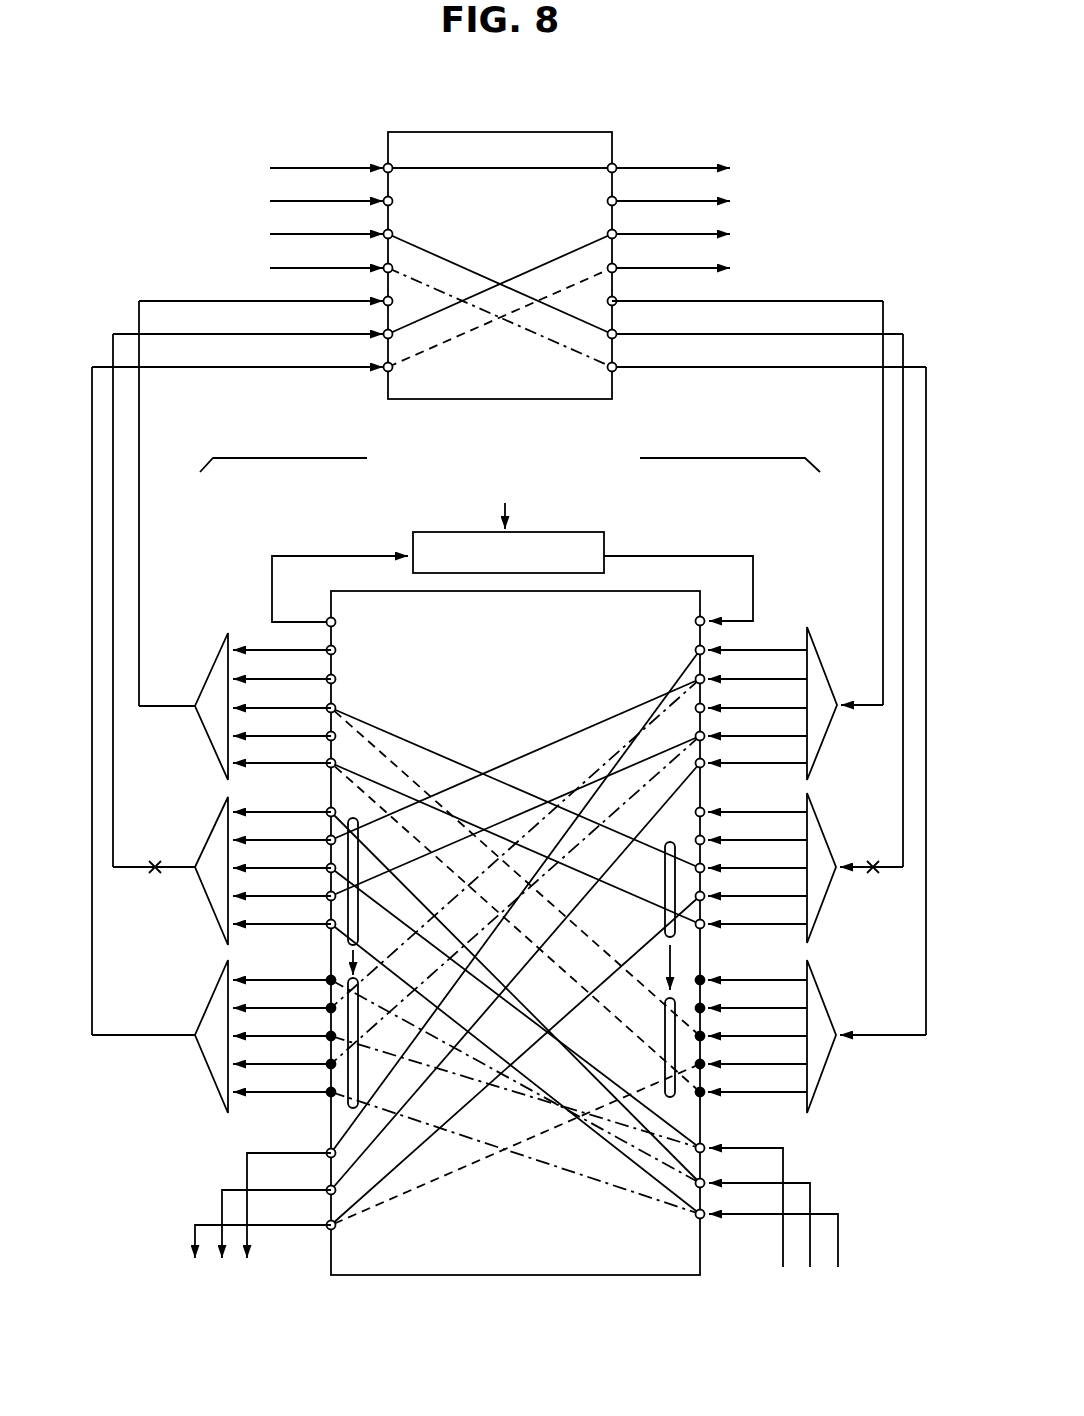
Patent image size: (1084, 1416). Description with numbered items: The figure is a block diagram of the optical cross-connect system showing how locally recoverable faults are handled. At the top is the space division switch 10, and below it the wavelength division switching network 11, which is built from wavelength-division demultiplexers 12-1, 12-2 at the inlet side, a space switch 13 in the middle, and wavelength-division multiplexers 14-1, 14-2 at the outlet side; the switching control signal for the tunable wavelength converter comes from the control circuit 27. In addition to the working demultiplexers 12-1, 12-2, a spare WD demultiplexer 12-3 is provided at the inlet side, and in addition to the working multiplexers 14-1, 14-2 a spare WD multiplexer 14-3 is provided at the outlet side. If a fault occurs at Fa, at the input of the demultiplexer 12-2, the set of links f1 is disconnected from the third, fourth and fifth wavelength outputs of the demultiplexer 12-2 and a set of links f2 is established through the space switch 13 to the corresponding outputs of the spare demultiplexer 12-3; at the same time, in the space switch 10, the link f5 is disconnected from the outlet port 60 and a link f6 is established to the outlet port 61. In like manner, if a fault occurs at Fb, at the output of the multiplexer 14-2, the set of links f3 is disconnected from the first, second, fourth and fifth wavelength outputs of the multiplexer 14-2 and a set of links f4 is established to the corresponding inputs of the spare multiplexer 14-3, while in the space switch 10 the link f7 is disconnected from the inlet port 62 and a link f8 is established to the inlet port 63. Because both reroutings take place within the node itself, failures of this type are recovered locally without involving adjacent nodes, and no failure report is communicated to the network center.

The space division switch 10 is at (509, 569).
The wavelength division switching network 11 is at (510, 531).
The space switch 13 is at (701, 612).
The control circuit 27 is at (505, 503).
The wavelength-division demultiplexer 12-1 is at (823, 667).
The wavelength-division demultiplexer 12-2 is at (822, 842).
The spare WD demultiplexer 12-3 is at (822, 1012).
The wavelength-division multiplexer 14-1 is at (220, 650).
The wavelength-division multiplexer 14-2 is at (210, 848).
The spare WD multiplexer 14-3 is at (210, 1015).
The outlet port 60 is at (616, 338).
The outlet port 61 is at (616, 371).
The inlet port 62 is at (384, 371).
The inlet port 63 is at (384, 338).
The set of links f1 is at (665, 884).
The set of links f2 is at (662, 1043).
The set of links f3 is at (358, 927).
The set of links f4 is at (358, 1070).
The link f5 is at (565, 322).
The link f6 is at (578, 350).
The link f7 is at (430, 326).
The link f8 is at (415, 357).
The fault Fa is at (873, 849).
The fault Fb is at (155, 854).